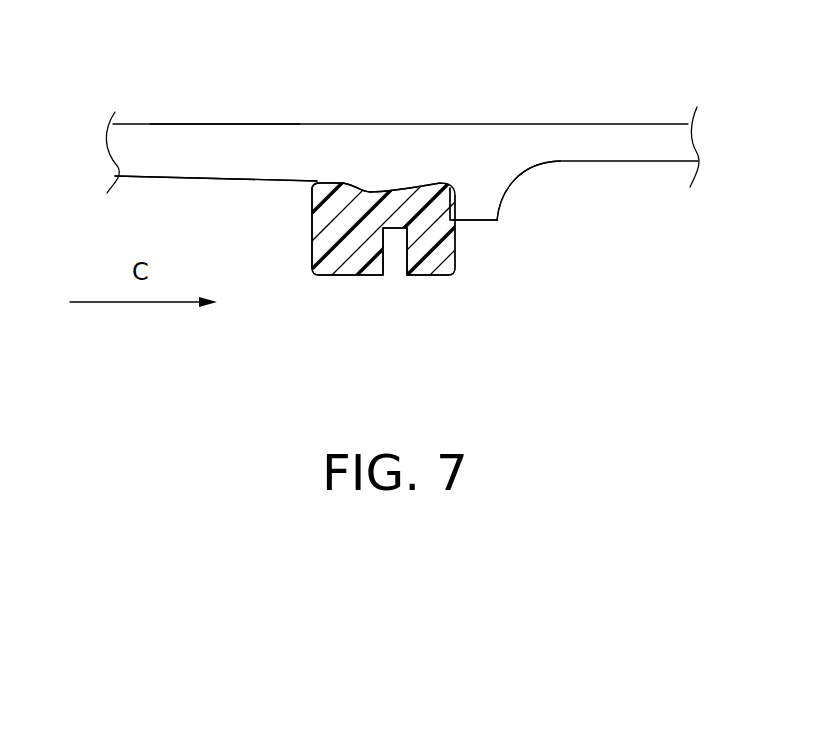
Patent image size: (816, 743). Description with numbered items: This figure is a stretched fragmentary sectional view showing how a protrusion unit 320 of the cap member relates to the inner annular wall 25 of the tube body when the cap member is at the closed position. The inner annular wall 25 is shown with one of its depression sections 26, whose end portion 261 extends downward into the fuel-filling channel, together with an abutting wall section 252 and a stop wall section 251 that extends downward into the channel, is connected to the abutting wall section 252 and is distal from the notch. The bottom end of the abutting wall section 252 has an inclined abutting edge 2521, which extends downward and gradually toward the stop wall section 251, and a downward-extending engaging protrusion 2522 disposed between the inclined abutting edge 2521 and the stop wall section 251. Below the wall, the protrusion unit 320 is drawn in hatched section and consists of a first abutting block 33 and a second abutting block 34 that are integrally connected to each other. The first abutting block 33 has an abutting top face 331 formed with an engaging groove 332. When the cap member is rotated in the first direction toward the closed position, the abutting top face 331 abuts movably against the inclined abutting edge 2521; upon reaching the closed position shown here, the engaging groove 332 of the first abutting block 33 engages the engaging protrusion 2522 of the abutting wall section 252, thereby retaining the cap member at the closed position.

The inner annular wall 25 is at (245, 124).
The abutting wall section 252 is at (205, 152).
The inclined abutting edge 2521 is at (160, 174).
The engaging protrusion 2522 is at (388, 185).
The depression section 26 is at (595, 124).
The end portion 261 is at (508, 153).
The stop wall section 251 is at (466, 167).
The first abutting block 33 is at (441, 190).
The abutting top face 331 is at (425, 215).
The engaging groove 332 is at (362, 190).
The second abutting block 34 is at (327, 235).
The protrusion unit 320 is at (391, 296).